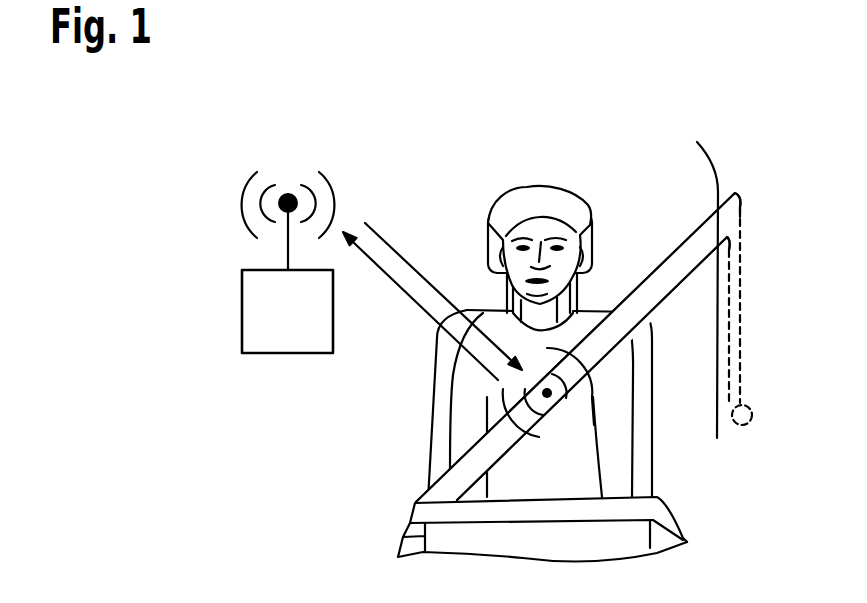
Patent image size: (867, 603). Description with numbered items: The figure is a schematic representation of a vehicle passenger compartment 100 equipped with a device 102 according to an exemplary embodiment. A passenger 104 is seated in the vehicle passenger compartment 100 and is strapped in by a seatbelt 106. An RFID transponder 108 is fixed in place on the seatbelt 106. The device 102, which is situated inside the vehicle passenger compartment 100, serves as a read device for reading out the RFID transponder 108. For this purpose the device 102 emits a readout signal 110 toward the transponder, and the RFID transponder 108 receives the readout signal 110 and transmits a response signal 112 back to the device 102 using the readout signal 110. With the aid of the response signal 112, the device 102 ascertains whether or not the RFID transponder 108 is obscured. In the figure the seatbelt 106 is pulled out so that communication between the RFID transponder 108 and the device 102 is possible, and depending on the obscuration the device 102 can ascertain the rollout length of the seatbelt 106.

The vehicle passenger compartment 100 is at (160, 155).
The device 102 is at (242, 310).
The passenger 104 is at (543, 204).
The seatbelt 106 is at (663, 277).
The RFID transponder 108 is at (594, 425).
The readout signal 110 is at (393, 240).
The response signal 112 is at (408, 293).